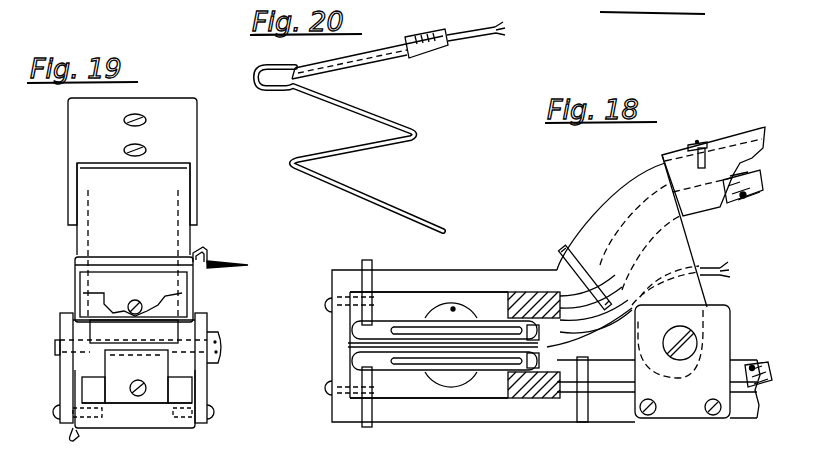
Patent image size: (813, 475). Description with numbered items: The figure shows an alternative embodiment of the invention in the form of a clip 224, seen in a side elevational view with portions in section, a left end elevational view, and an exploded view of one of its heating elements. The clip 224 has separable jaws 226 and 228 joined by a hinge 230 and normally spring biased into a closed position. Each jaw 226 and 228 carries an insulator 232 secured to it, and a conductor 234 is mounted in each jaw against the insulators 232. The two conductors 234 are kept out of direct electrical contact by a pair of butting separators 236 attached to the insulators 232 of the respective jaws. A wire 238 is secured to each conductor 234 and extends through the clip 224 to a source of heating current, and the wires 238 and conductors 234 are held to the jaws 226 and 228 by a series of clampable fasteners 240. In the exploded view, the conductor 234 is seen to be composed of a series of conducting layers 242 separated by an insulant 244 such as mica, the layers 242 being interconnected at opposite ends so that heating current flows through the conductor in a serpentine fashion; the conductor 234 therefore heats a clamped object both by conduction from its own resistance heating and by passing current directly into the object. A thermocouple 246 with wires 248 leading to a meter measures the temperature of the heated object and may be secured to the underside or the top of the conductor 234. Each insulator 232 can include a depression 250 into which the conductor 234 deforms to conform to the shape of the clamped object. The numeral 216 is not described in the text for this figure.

In FIG. 19, the spring plate 216 is at (185, 300).
In FIG. 19, the clip 224 is at (220, 251).
In FIG. 18, the clip 224 is at (488, 256).
In FIG. 19, the jaw 226 is at (95, 283).
In FIG. 18, the jaw 226 is at (338, 273).
In FIG. 19, the jaw 228 is at (182, 392).
In FIG. 18, the jaw 228 is at (335, 413).
In FIG. 19, the hinge 230 is at (58, 361).
In FIG. 18, the hinge 230 is at (703, 328).
In FIG. 18, the insulator 232 is at (387, 300).
In FIG. 19, the conductor 234 is at (93, 328).
In FIG. 20, the conductor 234 is at (288, 106).
In FIG. 18, the conductor 234 is at (358, 328).
In FIG. 19, the butting separator 236 is at (120, 298).
In FIG. 18, the butting separator 236 is at (333, 355).
In FIG. 18, the wire 238 is at (537, 297).
In FIG. 19, the clampable fastener 240 is at (183, 433).
In FIG. 18, the clampable fastener 240 is at (368, 260).
In FIG. 20, the conducting layer 242 is at (393, 120).
In FIG. 20, the insulant 244 is at (353, 114).
In FIG. 20, the thermocouple 246 is at (427, 53).
In FIG. 20, the wires 248 is at (477, 40).
In FIG. 18, the wires 248 is at (707, 268).
In FIG. 18, the depression 250 is at (453, 308).